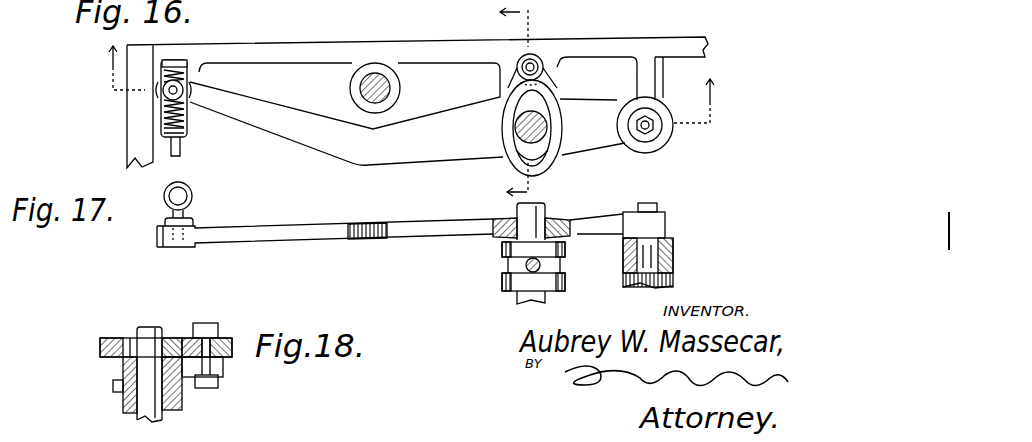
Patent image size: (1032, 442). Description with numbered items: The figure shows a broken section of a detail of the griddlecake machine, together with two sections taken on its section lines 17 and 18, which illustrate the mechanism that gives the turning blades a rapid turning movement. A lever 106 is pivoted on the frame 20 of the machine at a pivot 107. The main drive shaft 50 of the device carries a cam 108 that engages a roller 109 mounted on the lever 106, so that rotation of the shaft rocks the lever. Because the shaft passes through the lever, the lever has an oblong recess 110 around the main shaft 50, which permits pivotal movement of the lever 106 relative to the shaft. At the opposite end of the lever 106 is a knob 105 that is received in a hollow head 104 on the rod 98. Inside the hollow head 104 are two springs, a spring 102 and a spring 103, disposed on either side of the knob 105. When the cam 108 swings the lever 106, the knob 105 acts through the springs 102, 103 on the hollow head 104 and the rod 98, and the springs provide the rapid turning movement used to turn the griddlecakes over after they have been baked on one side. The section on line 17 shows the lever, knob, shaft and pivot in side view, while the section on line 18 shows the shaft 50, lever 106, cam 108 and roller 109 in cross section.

In FIG. 16, the section line 17— 17 is at (106, 48).
In FIG. 16, the section line 18— 18 is at (511, 101).
In FIG. 16, the frame 20 is at (356, 41).
In FIG. 16, the main shaft 50 is at (514, 128).
In FIG. 17, the main shaft 50 is at (518, 208).
In FIG. 18, the main shaft 50 is at (155, 330).
In FIG. 16, the rod 98 is at (181, 147).
In FIG. 16, the spring 102 is at (161, 65).
In FIG. 16, the spring 103 is at (165, 112).
In FIG. 16, the hollow head 104 is at (187, 65).
In FIG. 17, the hollow head 104 is at (191, 189).
In FIG. 16, the knob 105 is at (164, 91).
In FIG. 17, the knob 105 is at (191, 200).
In FIG. 16, the lever 106 is at (302, 97).
In FIG. 17, the lever 106 is at (302, 226).
In FIG. 18, the lever 106 is at (223, 338).
In FIG. 16, the pivot 107 is at (652, 132).
In FIG. 17, the pivot 107 is at (660, 212).
In FIG. 16, the cam 108 is at (510, 88).
In FIG. 18, the cam 108 is at (187, 375).
In FIG. 16, the roller 109 is at (538, 56).
In FIG. 18, the roller 109 is at (223, 372).
In FIG. 16, the oblong recess 110 is at (538, 147).
In FIG. 18, the oblong recess 110 is at (127, 337).